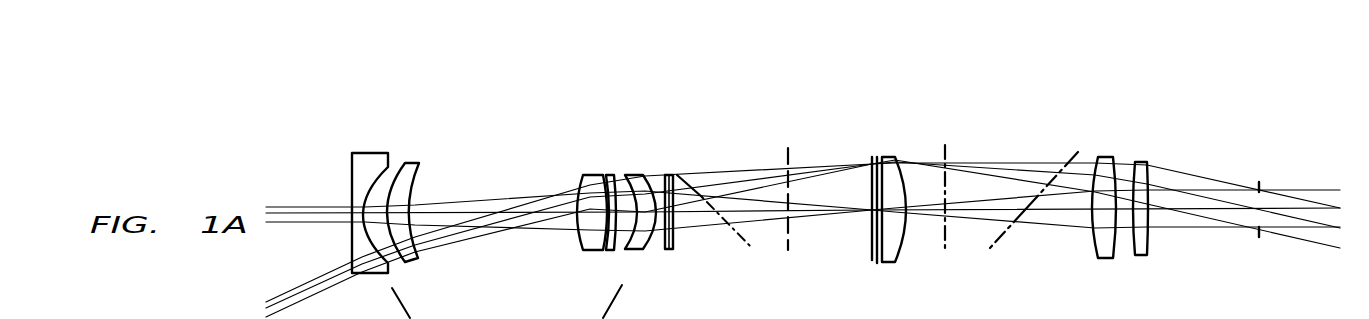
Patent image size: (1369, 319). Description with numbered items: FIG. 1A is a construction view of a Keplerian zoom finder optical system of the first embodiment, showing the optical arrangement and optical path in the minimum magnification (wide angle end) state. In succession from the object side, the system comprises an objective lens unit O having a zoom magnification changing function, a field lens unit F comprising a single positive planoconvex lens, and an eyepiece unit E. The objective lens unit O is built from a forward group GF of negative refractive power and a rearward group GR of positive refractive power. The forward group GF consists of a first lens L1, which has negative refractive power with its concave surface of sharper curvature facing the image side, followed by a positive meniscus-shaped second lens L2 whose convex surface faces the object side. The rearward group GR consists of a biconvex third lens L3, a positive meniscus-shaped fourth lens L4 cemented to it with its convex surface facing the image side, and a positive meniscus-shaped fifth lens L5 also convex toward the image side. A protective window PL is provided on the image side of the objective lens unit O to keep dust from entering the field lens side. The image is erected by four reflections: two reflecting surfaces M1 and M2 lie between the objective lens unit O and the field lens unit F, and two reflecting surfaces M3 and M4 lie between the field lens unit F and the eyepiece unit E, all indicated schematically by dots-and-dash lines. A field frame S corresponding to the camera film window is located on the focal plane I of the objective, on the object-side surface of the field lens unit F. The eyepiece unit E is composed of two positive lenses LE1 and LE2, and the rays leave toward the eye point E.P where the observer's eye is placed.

The objective lens unit O is at (610, 53).
The forward group GF is at (428, 99).
The rearward group GR is at (643, 99).
The first lens L1 is at (364, 152).
The second lens L2 is at (410, 162).
The third lens L3 is at (585, 174).
The fourth lens L4 is at (603, 174).
The fifth lens L5 is at (634, 175).
The protective window PL is at (667, 173).
The reflecting surface M1 is at (735, 236).
The reflecting surface M2 is at (789, 247).
The reflecting surface M3 is at (946, 250).
The reflecting surface M4 is at (1028, 223).
The focal plane I is at (868, 156).
The field frame S is at (877, 262).
The field lens unit F is at (897, 131).
The eyepiece unit E is at (1160, 128).
The positive lens LE1 is at (1103, 260).
The positive lens LE2 is at (1142, 257).
The eye point E.P is at (1258, 188).